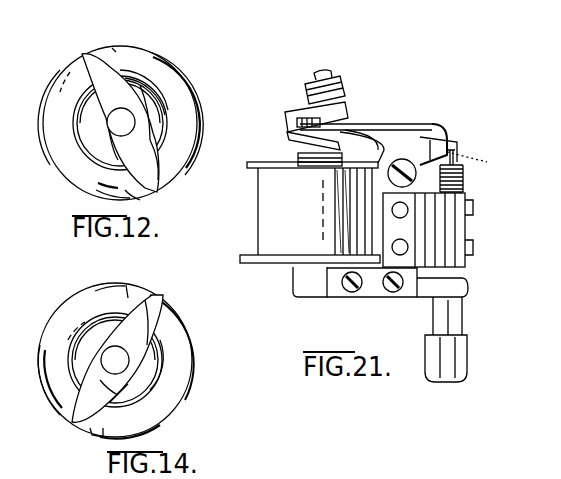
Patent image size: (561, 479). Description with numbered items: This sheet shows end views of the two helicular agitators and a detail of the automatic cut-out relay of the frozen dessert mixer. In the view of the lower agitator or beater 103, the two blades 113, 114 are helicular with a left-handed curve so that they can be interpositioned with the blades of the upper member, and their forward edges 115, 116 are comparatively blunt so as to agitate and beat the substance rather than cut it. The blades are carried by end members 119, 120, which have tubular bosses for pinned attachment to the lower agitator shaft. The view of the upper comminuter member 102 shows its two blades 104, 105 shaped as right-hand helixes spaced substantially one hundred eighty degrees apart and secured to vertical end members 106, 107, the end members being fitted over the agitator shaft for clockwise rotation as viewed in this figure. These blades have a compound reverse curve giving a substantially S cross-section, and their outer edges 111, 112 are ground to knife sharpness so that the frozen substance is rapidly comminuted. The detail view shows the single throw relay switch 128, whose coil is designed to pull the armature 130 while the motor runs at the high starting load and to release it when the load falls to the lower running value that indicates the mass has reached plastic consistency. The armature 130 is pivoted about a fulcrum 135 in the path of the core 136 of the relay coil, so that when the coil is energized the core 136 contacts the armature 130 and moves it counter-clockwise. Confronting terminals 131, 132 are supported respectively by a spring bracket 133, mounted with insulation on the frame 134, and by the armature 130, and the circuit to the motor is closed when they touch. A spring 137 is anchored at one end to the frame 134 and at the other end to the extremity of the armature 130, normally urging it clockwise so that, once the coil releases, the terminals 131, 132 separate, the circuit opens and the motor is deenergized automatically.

In FIG. 14, the upper comminuter member 102 is at (65, 320).
In FIG. 12, the lower agitator or beater 103 is at (168, 75).
In FIG. 14, the blade 104 is at (87, 300).
In FIG. 14, the blade 105 is at (177, 373).
In FIG. 14, the vertical end member 106 is at (127, 383).
In FIG. 14, the vertical end member 107 is at (147, 312).
In FIG. 14, the outer edge 111 is at (128, 298).
In FIG. 14, the outer edge 112 is at (100, 433).
In FIG. 12, the blade 113 is at (150, 65).
In FIG. 12, the blade 114 is at (75, 160).
In FIG. 12, the forward edge 115 is at (115, 45).
In FIG. 12, the forward edge 116 is at (130, 195).
In FIG. 12, the end member 119 is at (108, 147).
In FIG. 12, the end member 120 is at (145, 159).
In FIG. 21, the single throw relay switch 128 is at (273, 220).
In FIG. 21, the armature 130 is at (347, 112).
In FIG. 21, the terminal 131 is at (300, 122).
In FIG. 21, the terminal 132 is at (307, 105).
In FIG. 21, the spring bracket 133 is at (408, 124).
In FIG. 21, the frame 134 is at (448, 255).
In FIG. 21, the fulcrum 135 is at (405, 160).
In FIG. 21, the core 136 is at (300, 157).
In FIG. 21, the spring 137 is at (463, 150).